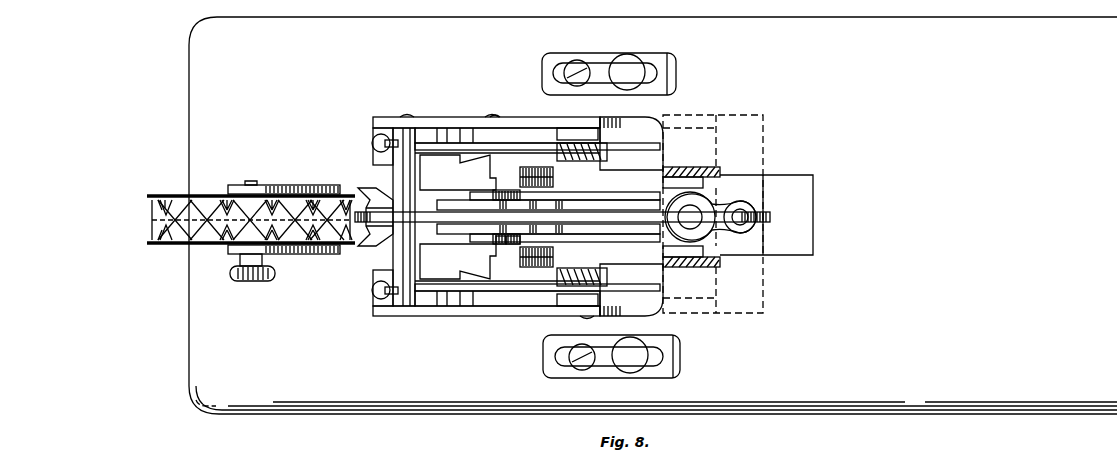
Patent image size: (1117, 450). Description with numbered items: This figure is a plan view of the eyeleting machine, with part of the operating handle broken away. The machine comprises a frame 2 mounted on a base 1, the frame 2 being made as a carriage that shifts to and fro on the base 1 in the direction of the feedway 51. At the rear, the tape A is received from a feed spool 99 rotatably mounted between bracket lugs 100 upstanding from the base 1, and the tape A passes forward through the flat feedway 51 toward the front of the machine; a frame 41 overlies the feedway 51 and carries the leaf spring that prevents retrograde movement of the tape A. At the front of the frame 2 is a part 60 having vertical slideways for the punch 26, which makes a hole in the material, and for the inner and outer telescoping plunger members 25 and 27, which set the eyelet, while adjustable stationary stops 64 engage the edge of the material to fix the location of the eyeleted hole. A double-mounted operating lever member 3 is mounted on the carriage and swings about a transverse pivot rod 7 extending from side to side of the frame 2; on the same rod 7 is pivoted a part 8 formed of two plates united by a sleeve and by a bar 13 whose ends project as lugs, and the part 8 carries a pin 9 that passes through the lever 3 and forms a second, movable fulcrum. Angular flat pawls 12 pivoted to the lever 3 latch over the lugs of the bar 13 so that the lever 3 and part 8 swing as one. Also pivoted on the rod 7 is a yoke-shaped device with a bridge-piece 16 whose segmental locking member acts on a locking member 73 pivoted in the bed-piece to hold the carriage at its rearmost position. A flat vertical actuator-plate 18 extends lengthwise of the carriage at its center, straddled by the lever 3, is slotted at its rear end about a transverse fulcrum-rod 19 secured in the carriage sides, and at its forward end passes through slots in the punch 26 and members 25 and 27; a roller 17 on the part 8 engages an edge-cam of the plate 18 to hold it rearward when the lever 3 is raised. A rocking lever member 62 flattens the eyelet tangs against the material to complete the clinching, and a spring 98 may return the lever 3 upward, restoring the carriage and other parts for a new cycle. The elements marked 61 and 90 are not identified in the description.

The base 1 is at (205, 93).
The frame 2 is at (395, 312).
The operating lever member 3 is at (684, 262).
The transverse pivot rod 7 is at (577, 202).
The part pivoted on the rod 8 is at (507, 226).
The rod or pin 9 is at (630, 203).
The angular-shaped flat pawls 12 is at (553, 250).
The bar 13 is at (705, 167).
The bridge-piece 16 is at (575, 133).
The roller 17 is at (495, 240).
The actuator-plate 18 is at (408, 218).
The fulcrum-rod 19 is at (400, 255).
The inner telescoping plunger member 25 is at (747, 202).
The punch 26 is at (767, 200).
The outer telescoping plunger member 27 is at (703, 228).
The frame 41 is at (510, 160).
The feedway 51 is at (372, 242).
The part at the front of the frame 60 is at (765, 235).
The screw 61 is at (495, 115).
The rocking lever member 62 is at (530, 135).
The adjustable stationary stops 64 is at (677, 77).
The locking member 73 is at (522, 237).
The bracket 90 is at (765, 242).
The spring 98 is at (448, 288).
The feed spool 99 is at (152, 196).
The bracket lugs 100 is at (230, 190).
The tape A is at (155, 214).